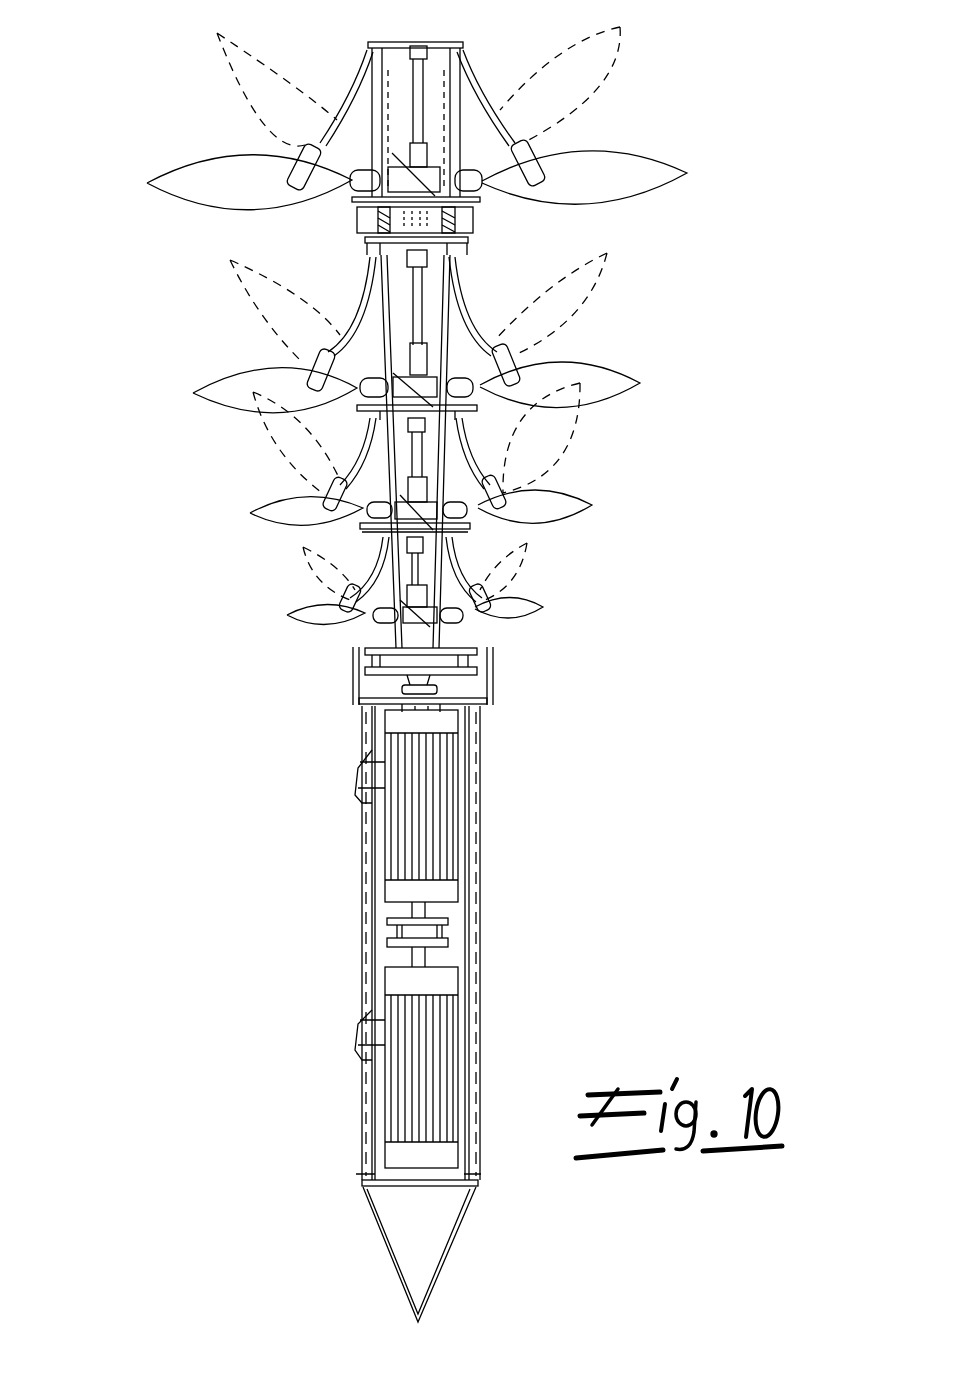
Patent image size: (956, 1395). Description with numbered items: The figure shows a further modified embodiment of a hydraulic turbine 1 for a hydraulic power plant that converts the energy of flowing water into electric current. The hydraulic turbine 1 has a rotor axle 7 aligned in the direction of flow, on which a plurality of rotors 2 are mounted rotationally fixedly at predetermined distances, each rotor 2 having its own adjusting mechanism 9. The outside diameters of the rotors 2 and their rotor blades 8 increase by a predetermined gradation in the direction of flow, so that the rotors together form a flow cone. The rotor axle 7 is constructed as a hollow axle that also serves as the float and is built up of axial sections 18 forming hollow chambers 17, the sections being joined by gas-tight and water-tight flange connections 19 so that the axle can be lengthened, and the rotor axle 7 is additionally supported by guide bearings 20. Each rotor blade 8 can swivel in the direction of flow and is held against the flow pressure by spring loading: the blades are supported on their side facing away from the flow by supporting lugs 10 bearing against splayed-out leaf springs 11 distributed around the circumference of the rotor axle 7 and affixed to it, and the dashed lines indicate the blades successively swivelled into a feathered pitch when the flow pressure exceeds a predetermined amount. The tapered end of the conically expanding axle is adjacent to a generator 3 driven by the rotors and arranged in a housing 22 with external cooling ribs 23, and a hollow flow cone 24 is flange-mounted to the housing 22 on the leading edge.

The hydraulic turbine 1 is at (190, 760).
The rotor 2 is at (675, 362).
The generator 3 is at (400, 1000).
The rotor axle 7 is at (378, 317).
The rotor blades 8 is at (640, 155).
The adjusting mechanism 9 is at (500, 83).
The supporting lugs 10 is at (300, 157).
The leaf springs 11 is at (340, 97).
The hollow chambers 17 is at (470, 520).
The axial sections 18 is at (368, 444).
The flange connections 19 is at (457, 257).
The guide bearings 20 is at (480, 221).
The housing 22 is at (473, 992).
The cooling ribs 23 is at (473, 940).
The hollow flow cone 24 is at (392, 1262).